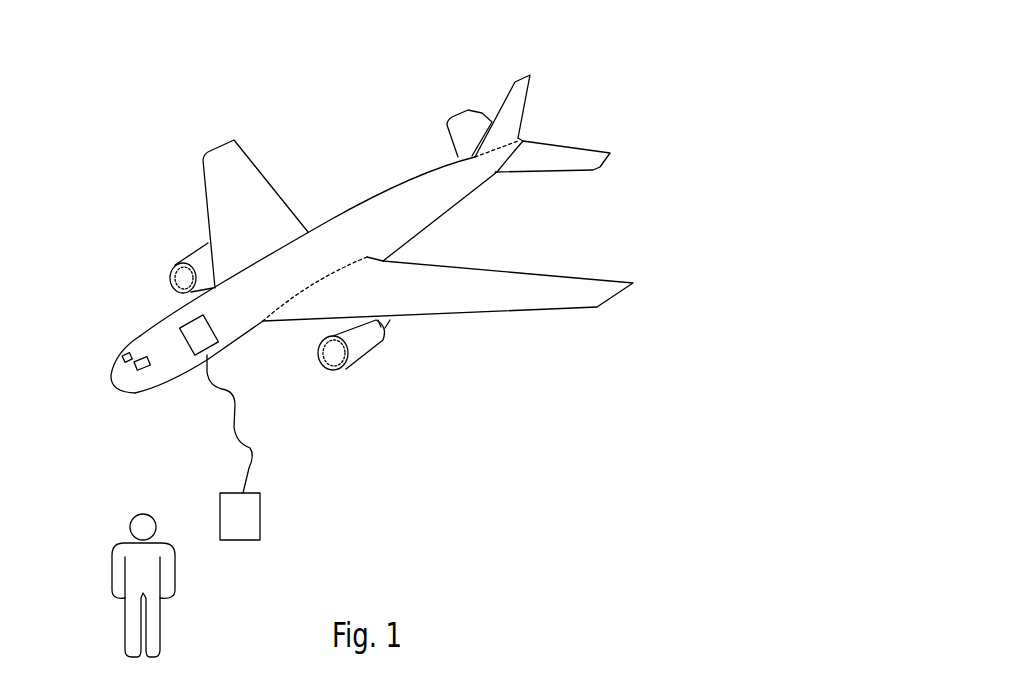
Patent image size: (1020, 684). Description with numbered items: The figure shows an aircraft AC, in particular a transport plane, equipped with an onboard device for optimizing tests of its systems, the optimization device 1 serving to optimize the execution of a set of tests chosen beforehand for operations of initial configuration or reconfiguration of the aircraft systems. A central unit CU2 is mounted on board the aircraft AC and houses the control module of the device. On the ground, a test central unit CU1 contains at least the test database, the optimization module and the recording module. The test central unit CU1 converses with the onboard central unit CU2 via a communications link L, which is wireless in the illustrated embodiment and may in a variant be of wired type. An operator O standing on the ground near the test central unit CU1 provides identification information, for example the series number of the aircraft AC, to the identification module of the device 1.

The optimization device 1 is at (378, 288).
The aircraft AC is at (378, 214).
The central unit CU2 is at (172, 312).
The test central unit CU1 is at (275, 516).
The communication link L is at (221, 424).
The operator O is at (106, 511).